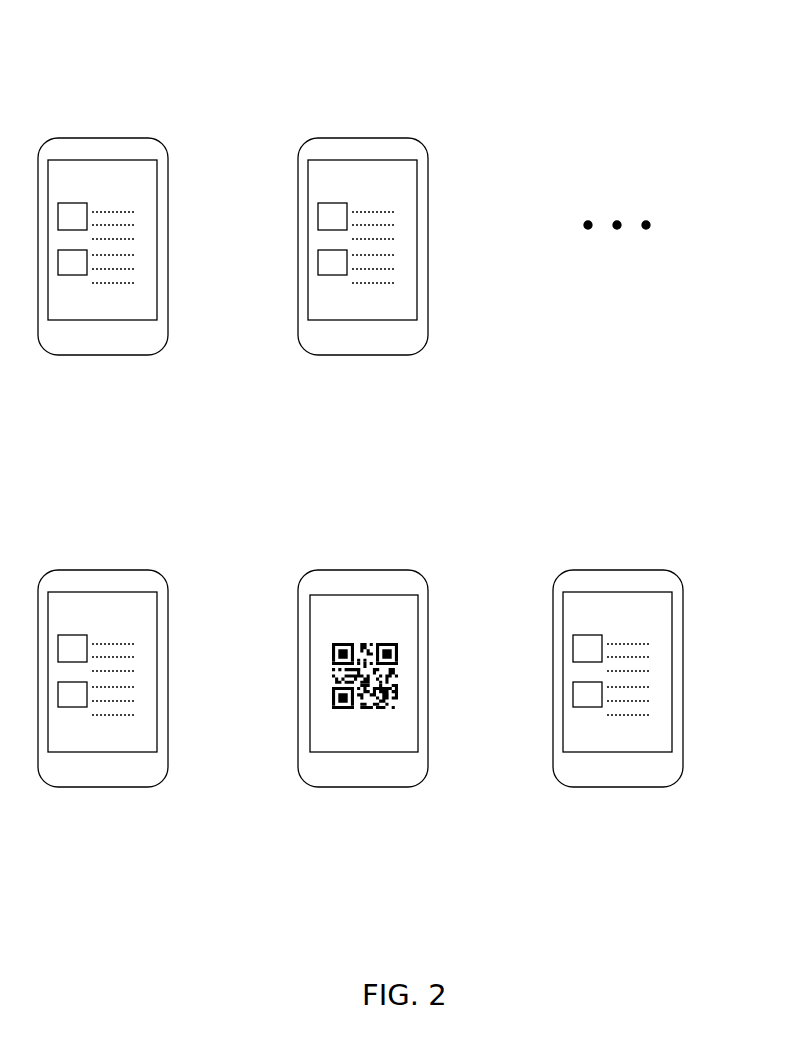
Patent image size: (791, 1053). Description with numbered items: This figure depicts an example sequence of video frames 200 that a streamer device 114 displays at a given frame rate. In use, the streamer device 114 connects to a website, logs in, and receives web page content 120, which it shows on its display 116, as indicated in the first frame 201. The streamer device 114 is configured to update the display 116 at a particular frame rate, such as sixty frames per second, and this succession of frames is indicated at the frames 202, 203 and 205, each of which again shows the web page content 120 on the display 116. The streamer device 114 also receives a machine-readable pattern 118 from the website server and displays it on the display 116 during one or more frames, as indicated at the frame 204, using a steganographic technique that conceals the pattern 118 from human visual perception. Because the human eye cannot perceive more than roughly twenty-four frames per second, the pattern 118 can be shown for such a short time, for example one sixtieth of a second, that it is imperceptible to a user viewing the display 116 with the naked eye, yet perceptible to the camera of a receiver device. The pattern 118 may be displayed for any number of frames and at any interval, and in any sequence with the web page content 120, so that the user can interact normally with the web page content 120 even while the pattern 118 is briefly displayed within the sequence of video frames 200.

The sequence of video frames 200 is at (652, 52).
The first frame 201 is at (91, 237).
The second frame 202 is at (351, 237).
The subsequent frame 203 is at (94, 669).
The pattern frame 204 is at (354, 669).
The final frame 205 is at (609, 669).
The streamer device 114 is at (410, 447).
The display 116 is at (415, 456).
The machine-readable pattern 118 is at (430, 676).
The web page content 120 is at (418, 445).